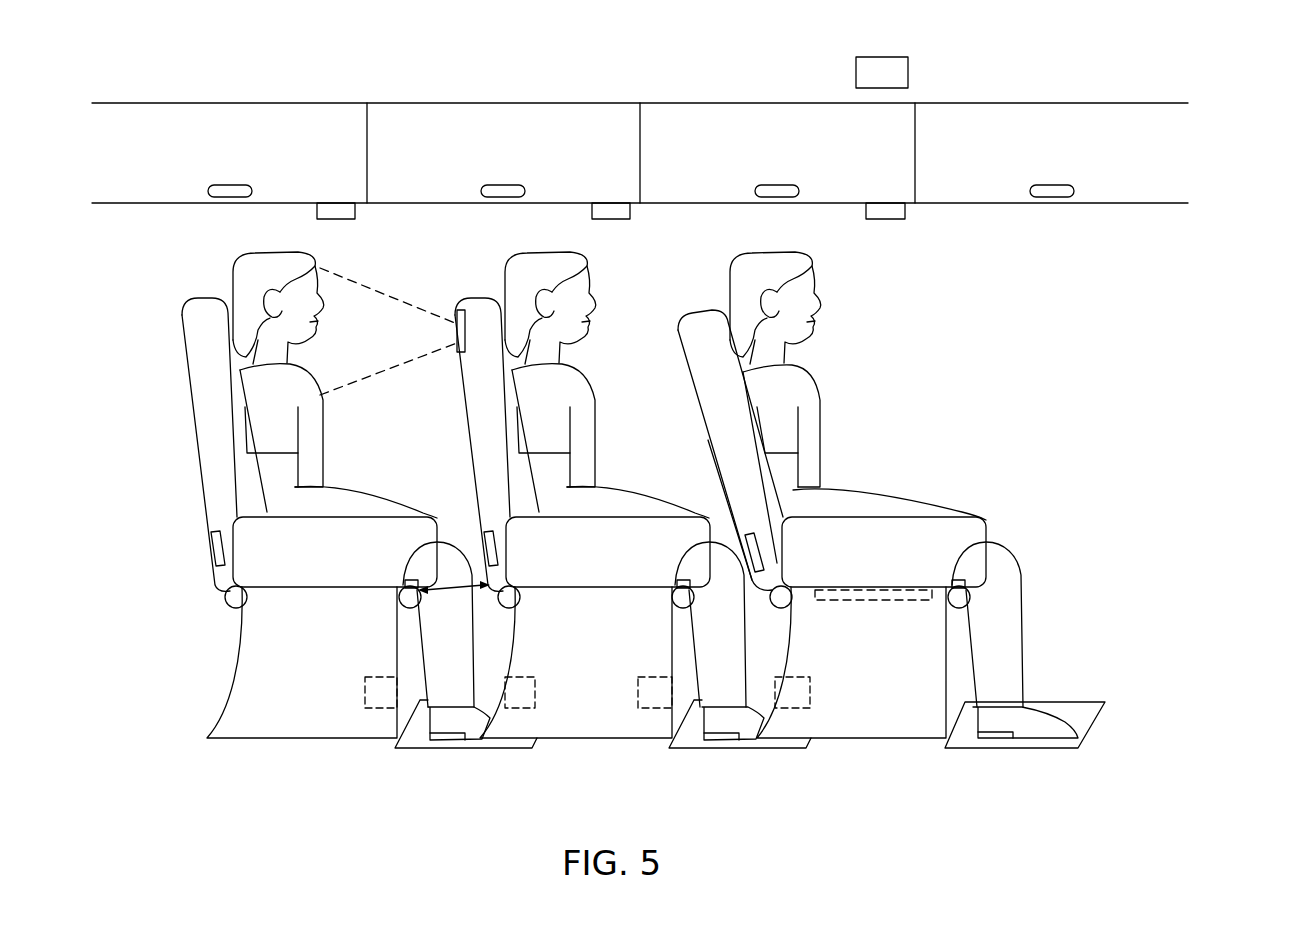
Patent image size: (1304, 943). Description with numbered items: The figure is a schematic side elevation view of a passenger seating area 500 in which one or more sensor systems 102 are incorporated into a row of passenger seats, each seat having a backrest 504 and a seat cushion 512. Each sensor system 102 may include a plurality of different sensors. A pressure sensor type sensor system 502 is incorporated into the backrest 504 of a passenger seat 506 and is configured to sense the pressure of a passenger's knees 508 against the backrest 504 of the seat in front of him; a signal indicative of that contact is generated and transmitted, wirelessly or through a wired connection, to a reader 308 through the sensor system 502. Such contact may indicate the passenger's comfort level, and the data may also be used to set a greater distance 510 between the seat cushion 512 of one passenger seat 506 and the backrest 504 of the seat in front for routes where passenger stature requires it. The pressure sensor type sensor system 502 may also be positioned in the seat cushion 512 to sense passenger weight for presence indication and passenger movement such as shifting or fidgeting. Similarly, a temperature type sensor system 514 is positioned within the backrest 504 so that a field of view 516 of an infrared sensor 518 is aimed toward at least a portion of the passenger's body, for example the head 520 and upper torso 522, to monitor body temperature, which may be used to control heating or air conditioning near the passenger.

The sensor system 102 is at (456, 309).
The reader 308 is at (908, 72).
The passenger seating area 500 is at (1236, 240).
The pressure sensor type sensor system 502 is at (222, 556).
The backrest 504 is at (203, 297).
The passenger seat 506 is at (328, 675).
The passenger's knees 508 is at (722, 542).
The distance 510 is at (458, 588).
The seat cushion 512 is at (223, 597).
The temperature type sensor system 514 is at (457, 348).
The field of view 516 is at (388, 317).
The infrared sensor 518 is at (469, 319).
The head 520 is at (261, 262).
The upper torso 522 is at (361, 477).